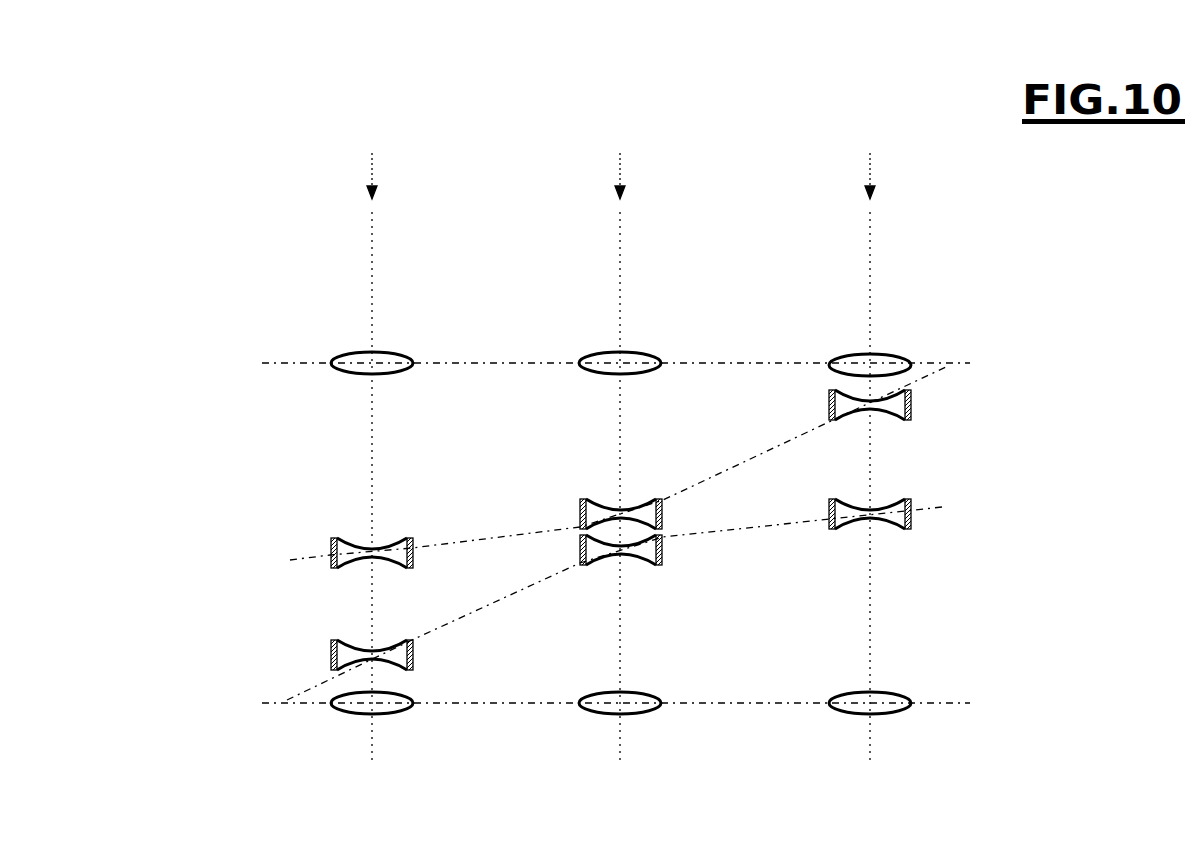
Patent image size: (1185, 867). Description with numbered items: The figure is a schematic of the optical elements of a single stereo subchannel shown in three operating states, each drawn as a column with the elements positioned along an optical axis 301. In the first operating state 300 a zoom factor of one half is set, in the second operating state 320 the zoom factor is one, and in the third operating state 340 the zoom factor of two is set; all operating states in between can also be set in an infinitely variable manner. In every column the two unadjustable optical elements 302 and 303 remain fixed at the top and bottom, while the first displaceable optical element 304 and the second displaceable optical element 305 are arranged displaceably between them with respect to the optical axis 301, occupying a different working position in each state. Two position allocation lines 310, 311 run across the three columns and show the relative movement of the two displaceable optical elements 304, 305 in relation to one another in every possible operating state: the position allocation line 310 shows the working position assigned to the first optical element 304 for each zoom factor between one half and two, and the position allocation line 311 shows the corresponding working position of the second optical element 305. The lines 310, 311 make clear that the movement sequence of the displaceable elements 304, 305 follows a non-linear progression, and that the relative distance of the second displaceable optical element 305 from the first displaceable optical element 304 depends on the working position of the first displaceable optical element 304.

The first operating state 300 is at (374, 153).
The second operating state 320 is at (620, 153).
The third operating state 340 is at (870, 153).
The optical axis 301 is at (372, 253).
The unadjustable optical element 302 is at (400, 352).
The unadjustable optical element 303 is at (385, 715).
The first displaceable optical element 304 is at (352, 645).
The second displaceable optical element 305 is at (343, 538).
The position allocation line 310 is at (298, 690).
The position allocation line 311 is at (290, 560).